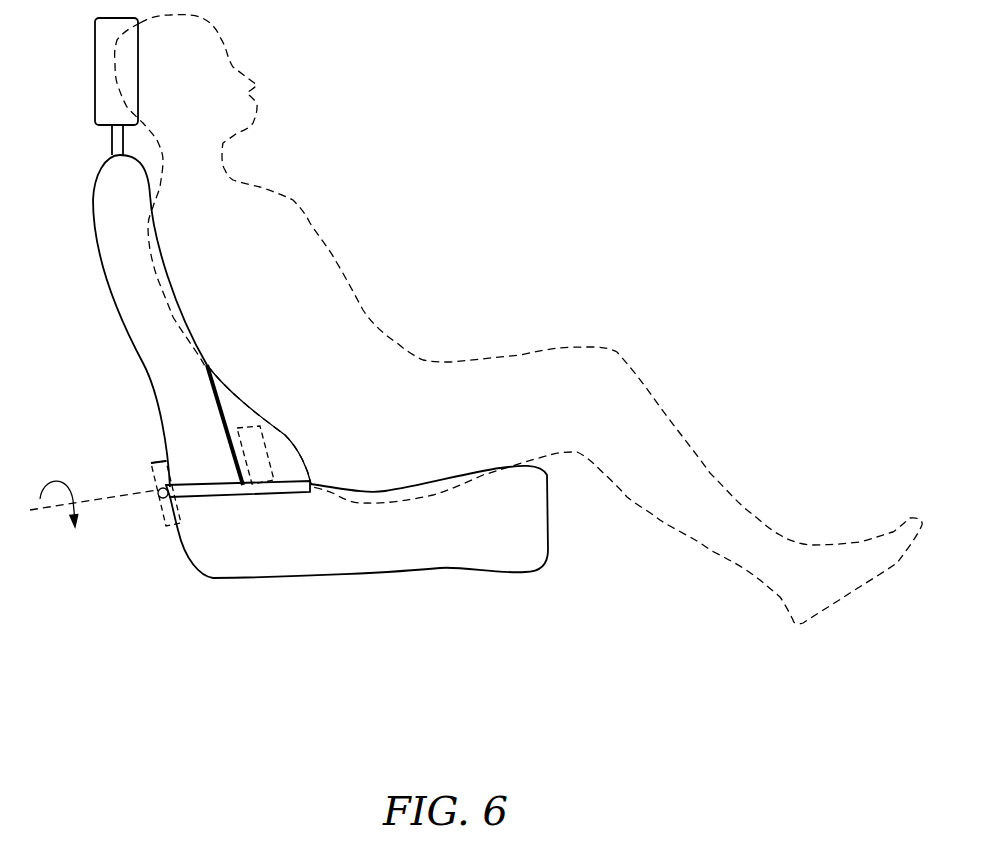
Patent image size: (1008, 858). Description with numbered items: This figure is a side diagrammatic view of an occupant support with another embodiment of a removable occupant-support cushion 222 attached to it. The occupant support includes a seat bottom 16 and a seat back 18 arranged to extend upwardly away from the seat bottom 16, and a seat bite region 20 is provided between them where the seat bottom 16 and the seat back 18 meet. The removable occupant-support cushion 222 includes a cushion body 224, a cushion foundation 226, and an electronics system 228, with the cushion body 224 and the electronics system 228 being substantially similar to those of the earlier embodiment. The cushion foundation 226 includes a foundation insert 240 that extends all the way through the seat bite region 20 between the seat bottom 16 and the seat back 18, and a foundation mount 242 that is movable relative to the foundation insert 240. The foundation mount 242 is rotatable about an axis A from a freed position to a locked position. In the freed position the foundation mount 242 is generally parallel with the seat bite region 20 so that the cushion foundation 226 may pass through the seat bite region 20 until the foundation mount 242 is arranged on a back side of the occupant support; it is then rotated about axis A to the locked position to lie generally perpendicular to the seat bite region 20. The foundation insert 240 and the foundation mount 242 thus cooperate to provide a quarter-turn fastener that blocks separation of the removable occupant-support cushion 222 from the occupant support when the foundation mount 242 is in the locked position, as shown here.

The seat bottom 16 is at (475, 543).
The seat back 18 is at (120, 283).
The seat bite region 20 is at (188, 472).
The removable occupant-support cushion 222 is at (272, 390).
The cushion body 224 is at (232, 393).
The cushion foundation 226 is at (205, 518).
The electronics system 228 is at (287, 470).
The foundation insert 240 is at (213, 497).
The foundation mount 242 is at (148, 470).
The axis A is at (80, 504).